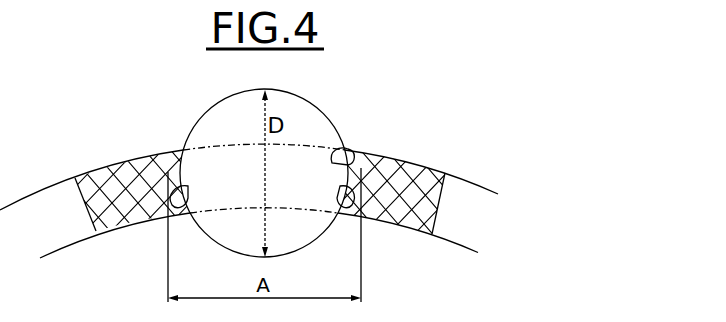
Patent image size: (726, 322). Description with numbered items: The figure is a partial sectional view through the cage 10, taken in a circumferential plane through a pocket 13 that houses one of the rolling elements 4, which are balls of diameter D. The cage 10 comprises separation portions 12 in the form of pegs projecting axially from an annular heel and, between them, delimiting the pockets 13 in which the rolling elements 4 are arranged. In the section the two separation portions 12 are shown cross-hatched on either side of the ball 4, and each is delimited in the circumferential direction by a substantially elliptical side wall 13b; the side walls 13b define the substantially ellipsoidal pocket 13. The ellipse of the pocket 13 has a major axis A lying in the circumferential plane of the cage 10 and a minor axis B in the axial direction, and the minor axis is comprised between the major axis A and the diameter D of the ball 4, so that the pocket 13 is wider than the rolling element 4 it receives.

The cage 10 is at (493, 104).
The separation portion 12 is at (117, 162).
The rolling element 4 is at (258, 185).
The pocket 13 is at (348, 160).
The side wall 13b is at (160, 220).